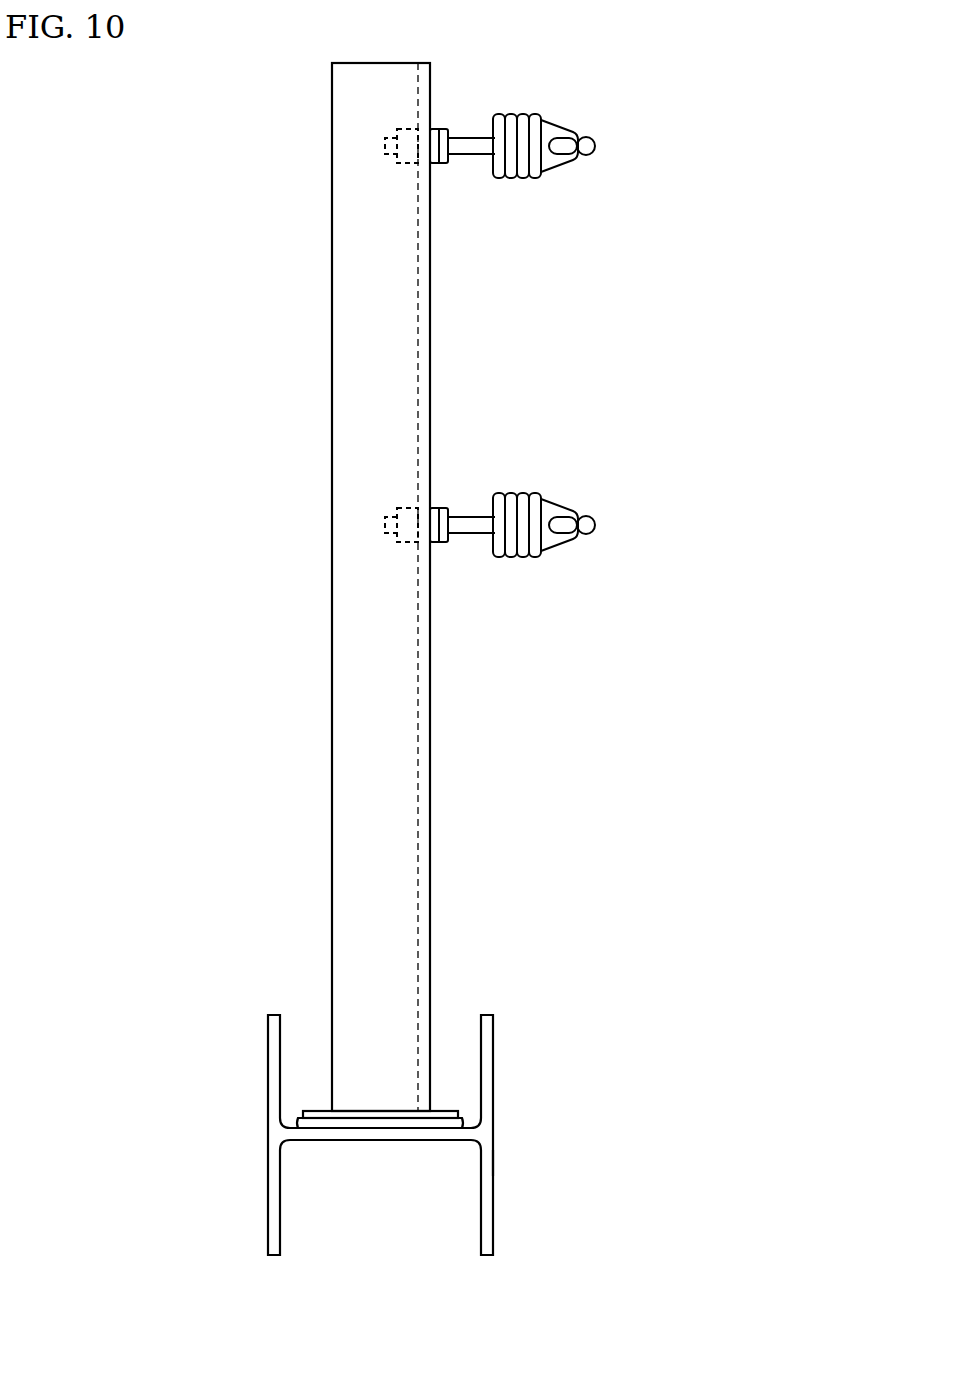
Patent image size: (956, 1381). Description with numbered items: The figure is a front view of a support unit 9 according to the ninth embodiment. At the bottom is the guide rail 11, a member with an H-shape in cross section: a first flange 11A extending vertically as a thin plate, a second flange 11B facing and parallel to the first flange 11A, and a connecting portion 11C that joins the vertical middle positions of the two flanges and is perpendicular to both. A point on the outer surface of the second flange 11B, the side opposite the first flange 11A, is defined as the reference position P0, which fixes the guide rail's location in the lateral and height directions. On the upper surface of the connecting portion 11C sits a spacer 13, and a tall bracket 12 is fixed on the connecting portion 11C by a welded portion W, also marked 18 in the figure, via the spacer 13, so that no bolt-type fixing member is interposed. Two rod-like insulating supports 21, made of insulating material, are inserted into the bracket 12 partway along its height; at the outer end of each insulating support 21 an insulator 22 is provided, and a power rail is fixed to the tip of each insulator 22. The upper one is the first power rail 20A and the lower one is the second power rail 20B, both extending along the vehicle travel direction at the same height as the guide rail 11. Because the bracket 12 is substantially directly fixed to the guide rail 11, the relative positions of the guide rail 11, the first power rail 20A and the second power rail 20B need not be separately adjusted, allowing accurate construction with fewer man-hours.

The support unit 9 is at (150, 173).
The bracket 12 is at (345, 100).
The insulating support 21 is at (553, 88).
The insulator 22 is at (500, 179).
The first power rail 20A is at (592, 163).
The second power rail 20B is at (592, 542).
The spacer 13 is at (455, 1115).
The welded portion W is at (452, 1128).
The weld joint 18 is at (380, 1123).
The guide rail 11 is at (487, 1253).
The first flange 11A is at (270, 1240).
The second flange 11B is at (490, 1228).
The connecting portion 11C is at (338, 1141).
The reference position P0 is at (494, 1163).